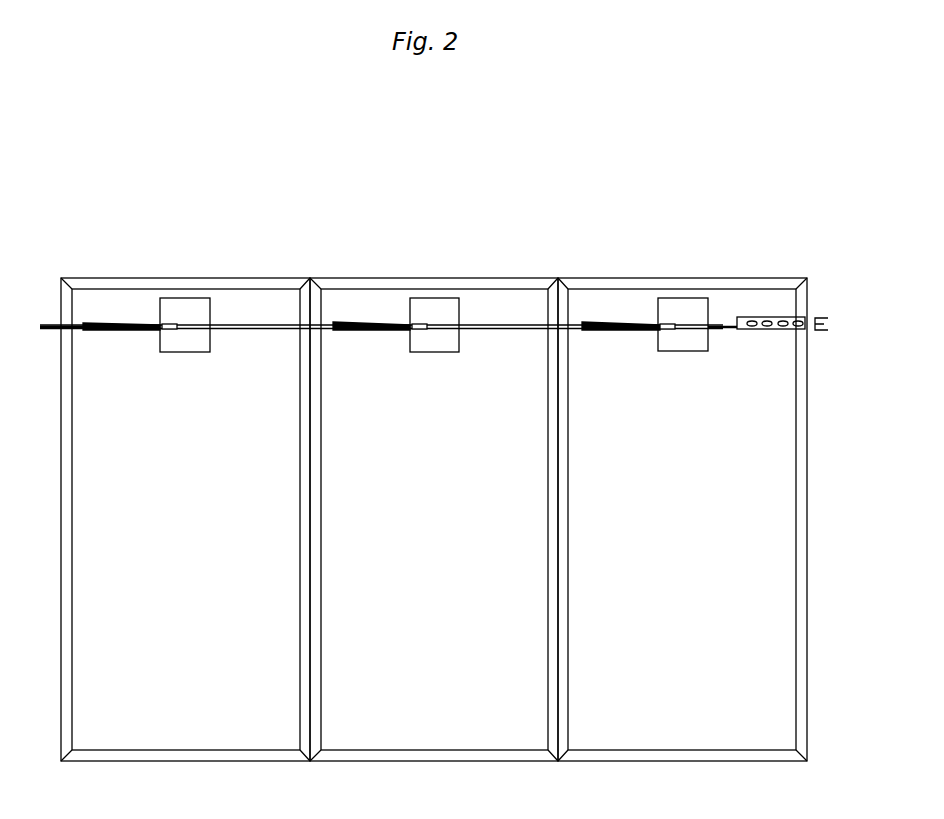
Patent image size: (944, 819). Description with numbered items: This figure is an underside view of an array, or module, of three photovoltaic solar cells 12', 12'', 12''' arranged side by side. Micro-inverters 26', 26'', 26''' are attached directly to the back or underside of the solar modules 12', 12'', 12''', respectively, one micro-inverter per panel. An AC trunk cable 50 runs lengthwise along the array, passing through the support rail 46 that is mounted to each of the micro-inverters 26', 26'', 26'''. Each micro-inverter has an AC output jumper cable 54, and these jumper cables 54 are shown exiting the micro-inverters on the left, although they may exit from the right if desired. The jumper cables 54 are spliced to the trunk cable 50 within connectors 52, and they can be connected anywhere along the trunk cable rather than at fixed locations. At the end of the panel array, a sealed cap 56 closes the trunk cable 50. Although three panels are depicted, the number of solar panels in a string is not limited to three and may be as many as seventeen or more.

The photovoltaic solar cell 12' is at (185, 479).
The photovoltaic solar cell 12'' is at (434, 479).
The photovoltaic solar cell 12''' is at (683, 479).
The micro-inverter 26' is at (189, 365).
The micro-inverter 26'' is at (442, 365).
The micro-inverter 26''' is at (675, 365).
The support rail 46 is at (792, 316).
The AC trunk cable 50 is at (50, 321).
The connector 52 is at (171, 322).
The micro-inverter AC output jumper cable 54 is at (122, 320).
The sealed cap 56 is at (726, 332).